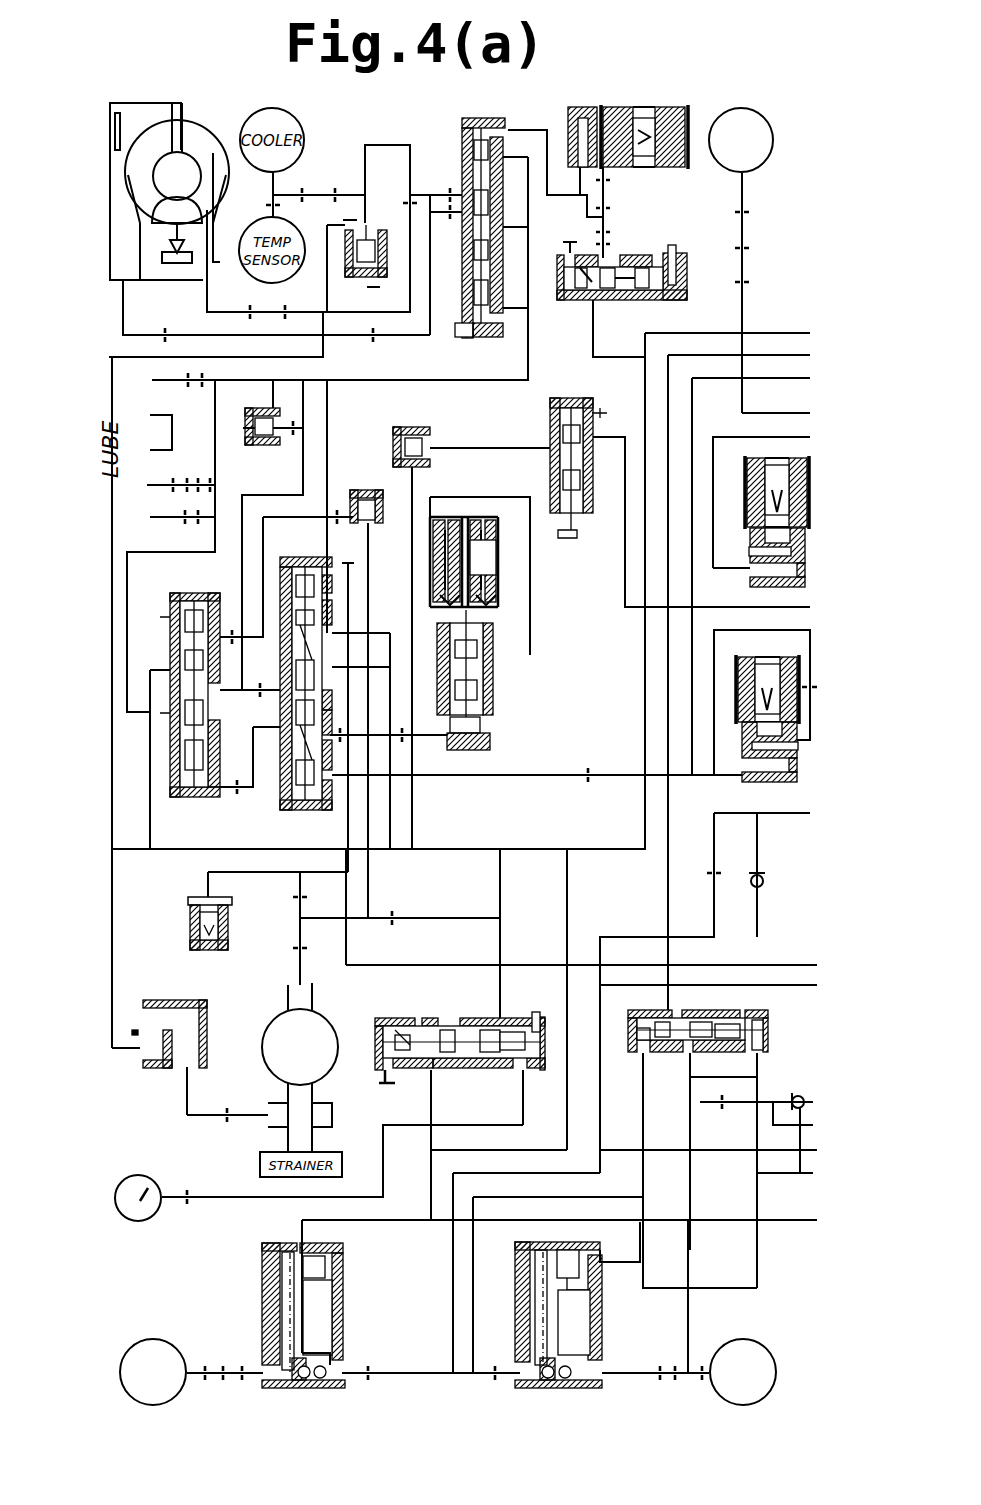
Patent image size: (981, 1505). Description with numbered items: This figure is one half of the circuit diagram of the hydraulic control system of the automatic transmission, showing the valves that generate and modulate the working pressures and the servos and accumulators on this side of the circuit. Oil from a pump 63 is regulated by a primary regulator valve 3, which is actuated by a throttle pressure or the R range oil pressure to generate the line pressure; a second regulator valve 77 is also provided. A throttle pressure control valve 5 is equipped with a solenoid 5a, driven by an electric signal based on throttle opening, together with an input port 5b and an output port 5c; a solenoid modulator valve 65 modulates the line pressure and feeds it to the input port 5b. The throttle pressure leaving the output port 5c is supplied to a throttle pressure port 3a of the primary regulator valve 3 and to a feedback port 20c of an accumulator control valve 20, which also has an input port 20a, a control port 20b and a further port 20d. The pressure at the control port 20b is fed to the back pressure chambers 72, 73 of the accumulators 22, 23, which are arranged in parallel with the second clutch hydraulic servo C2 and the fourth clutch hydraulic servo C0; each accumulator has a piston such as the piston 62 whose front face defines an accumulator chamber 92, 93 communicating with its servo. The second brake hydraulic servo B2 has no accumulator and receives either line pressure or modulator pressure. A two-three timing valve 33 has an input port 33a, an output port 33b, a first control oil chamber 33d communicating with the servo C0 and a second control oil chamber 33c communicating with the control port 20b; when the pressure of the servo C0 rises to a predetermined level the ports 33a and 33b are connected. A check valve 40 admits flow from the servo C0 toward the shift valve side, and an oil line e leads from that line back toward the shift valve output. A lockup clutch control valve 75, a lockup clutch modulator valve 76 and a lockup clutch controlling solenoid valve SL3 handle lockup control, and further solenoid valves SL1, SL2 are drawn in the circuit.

The primary regulator valve 3 is at (292, 568).
The throttle pressure port 3a is at (330, 720).
The throttle pressure control valve 5 is at (480, 520).
The solenoid 5a is at (495, 568).
The input port 5b is at (437, 652).
The output port 5c is at (455, 749).
The accumulator control valve 20 is at (468, 1050).
The input port 20a is at (418, 1020).
The control port 20b is at (432, 1075).
The feedback port 20c is at (502, 1018).
The manual valve port 20d is at (450, 1018).
The 2-3 timing valve 33 is at (715, 1007).
The input port 33a is at (677, 1010).
The output port 33b is at (690, 1052).
The second control oil chamber 33c is at (632, 1052).
The first control oil chamber 33d is at (758, 1055).
The check valve 40 is at (789, 1168).
The piston 62 is at (272, 1316).
The pump 63 is at (322, 1020).
The solenoid modulator valve 65 is at (584, 515).
The back pressure chamber 72 is at (318, 1262).
The back pressure chamber 73 is at (570, 1245).
The lockup clutch control valve 75 is at (488, 118).
The lockup clutch modulator valve 76 is at (625, 253).
The second regulator valve 77 is at (170, 602).
The accumulator 22 is at (330, 1297).
The accumulator 23 is at (522, 1280).
The accumulator chamber 92 is at (322, 1328).
The accumulator chamber 93 is at (578, 1330).
The oil line e is at (750, 985).
The second brake hydraulic servo B2 is at (741, 140).
The second clutch hydraulic servo C2 is at (153, 1372).
The fourth clutch hydraulic servo C0 is at (743, 1372).
The linear solenoid SL1 is at (767, 704).
The linear solenoid SL2 is at (777, 508).
The lockup clutch controlling solenoid valve SL3 is at (612, 118).